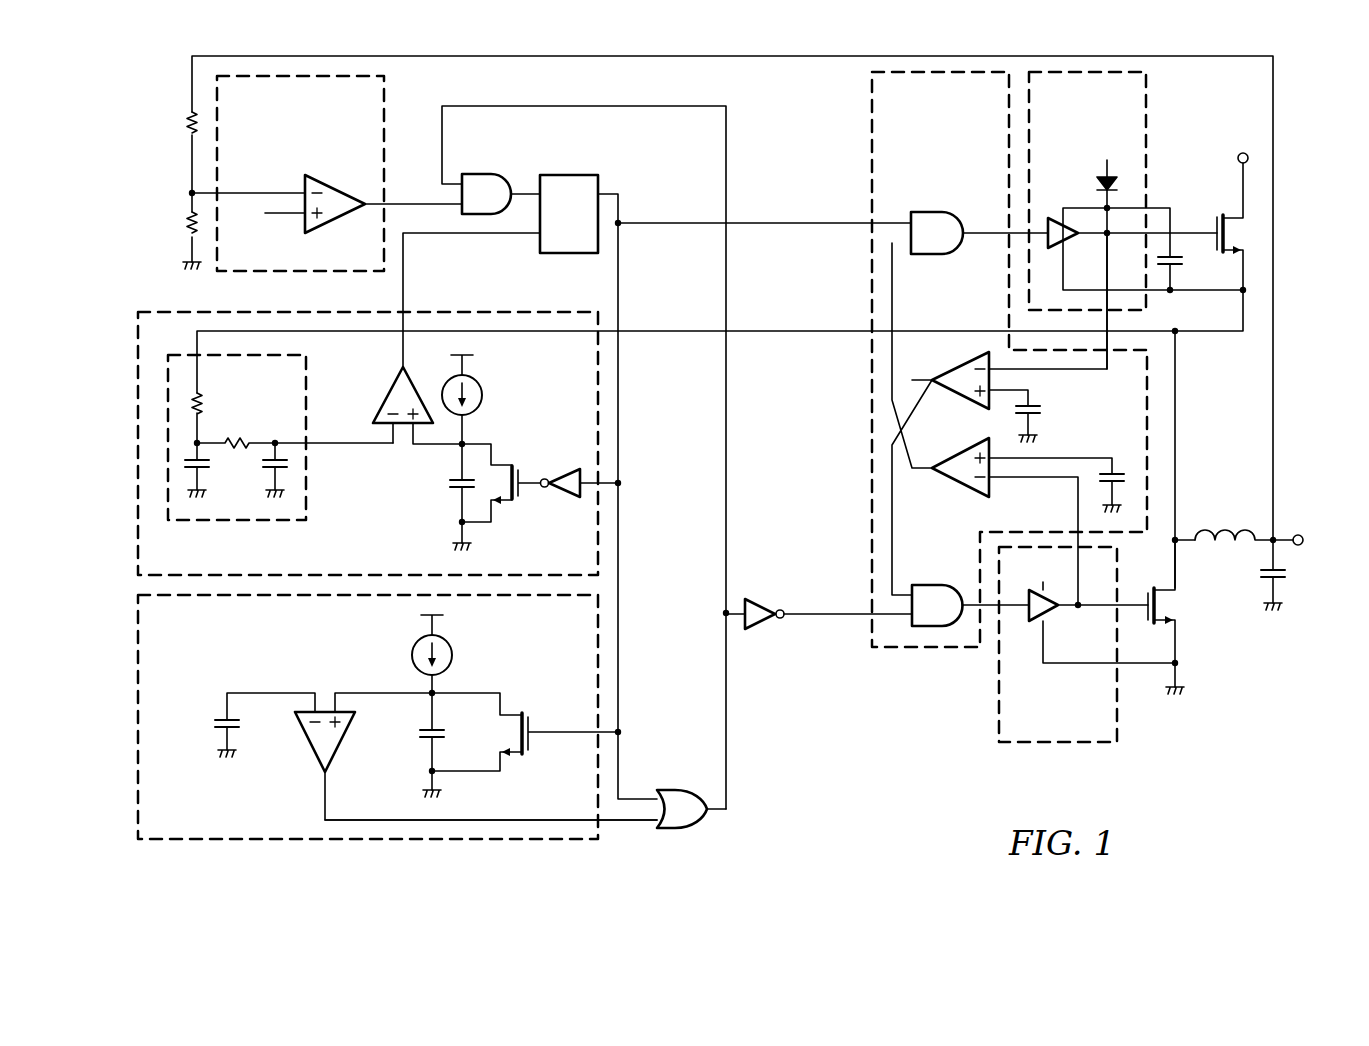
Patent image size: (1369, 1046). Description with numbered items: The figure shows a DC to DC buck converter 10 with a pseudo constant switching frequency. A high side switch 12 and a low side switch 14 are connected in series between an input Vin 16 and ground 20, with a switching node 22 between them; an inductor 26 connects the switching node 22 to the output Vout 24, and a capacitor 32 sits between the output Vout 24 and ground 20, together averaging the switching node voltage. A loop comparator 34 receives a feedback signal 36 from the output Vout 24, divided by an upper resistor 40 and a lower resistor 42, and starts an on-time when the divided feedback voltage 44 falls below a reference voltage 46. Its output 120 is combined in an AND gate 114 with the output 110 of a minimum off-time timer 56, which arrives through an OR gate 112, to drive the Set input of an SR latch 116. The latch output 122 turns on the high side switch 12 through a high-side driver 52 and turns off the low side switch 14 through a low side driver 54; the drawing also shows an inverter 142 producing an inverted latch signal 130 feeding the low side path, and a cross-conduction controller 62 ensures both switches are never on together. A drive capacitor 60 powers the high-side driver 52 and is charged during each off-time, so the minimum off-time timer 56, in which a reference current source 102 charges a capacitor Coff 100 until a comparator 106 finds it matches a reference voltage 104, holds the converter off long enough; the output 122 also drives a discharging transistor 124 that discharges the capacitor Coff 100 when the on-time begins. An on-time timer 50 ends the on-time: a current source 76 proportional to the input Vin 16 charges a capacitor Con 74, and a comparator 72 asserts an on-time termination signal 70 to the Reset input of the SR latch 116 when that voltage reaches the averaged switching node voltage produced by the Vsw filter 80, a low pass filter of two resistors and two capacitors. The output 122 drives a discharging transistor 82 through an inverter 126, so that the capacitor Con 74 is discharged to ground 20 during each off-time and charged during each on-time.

The DC to DC buck converter 10 is at (1305, 775).
The high side switch 12 is at (1213, 219).
The low side switch 14 is at (1140, 591).
The input Vin 16 is at (1239, 156).
The ground 20 is at (473, 546).
The switching node 22 is at (1182, 537).
The output Vout 24 is at (1297, 534).
The inductor 26 is at (1233, 528).
The capacitor 32 is at (1287, 577).
The loop comparator 34 is at (384, 102).
The feedback signal 36 is at (752, 58).
The upper resistor 40 is at (187, 124).
The lower resistor 42 is at (187, 225).
The divided feedback voltage 44 is at (292, 190).
The reference voltage 46 is at (292, 220).
The on-time timer 50 is at (178, 313).
The high-side driver 52 is at (1146, 108).
The low side driver 54 is at (1117, 718).
The minimum off-time timer 56 is at (220, 812).
The drive capacitor 60 is at (1185, 262).
The cross-conduction controller 62 is at (872, 110).
The on-time termination signal 70 is at (477, 234).
The comparator 72 is at (384, 394).
The capacitor Con 74 is at (450, 487).
The current source 76 is at (477, 373).
The Vsw filter 80 is at (306, 483).
The discharging transistor 82 is at (523, 477).
The capacitor Coff 100 is at (420, 733).
The reference current source 102 is at (452, 655).
The reference voltage 104 is at (212, 725).
The comparator 106 is at (308, 744).
The output 110 is at (622, 823).
The OR gate 112 is at (698, 825).
The AND gate 114 is at (488, 171).
The SR latch 116 is at (571, 254).
The output 120 is at (422, 203).
The output 122 is at (773, 222).
The discharging transistor 124 is at (532, 745).
The inverter 126 is at (557, 493).
The inverted latch output line 130 is at (803, 617).
The inverter 142 is at (762, 600).